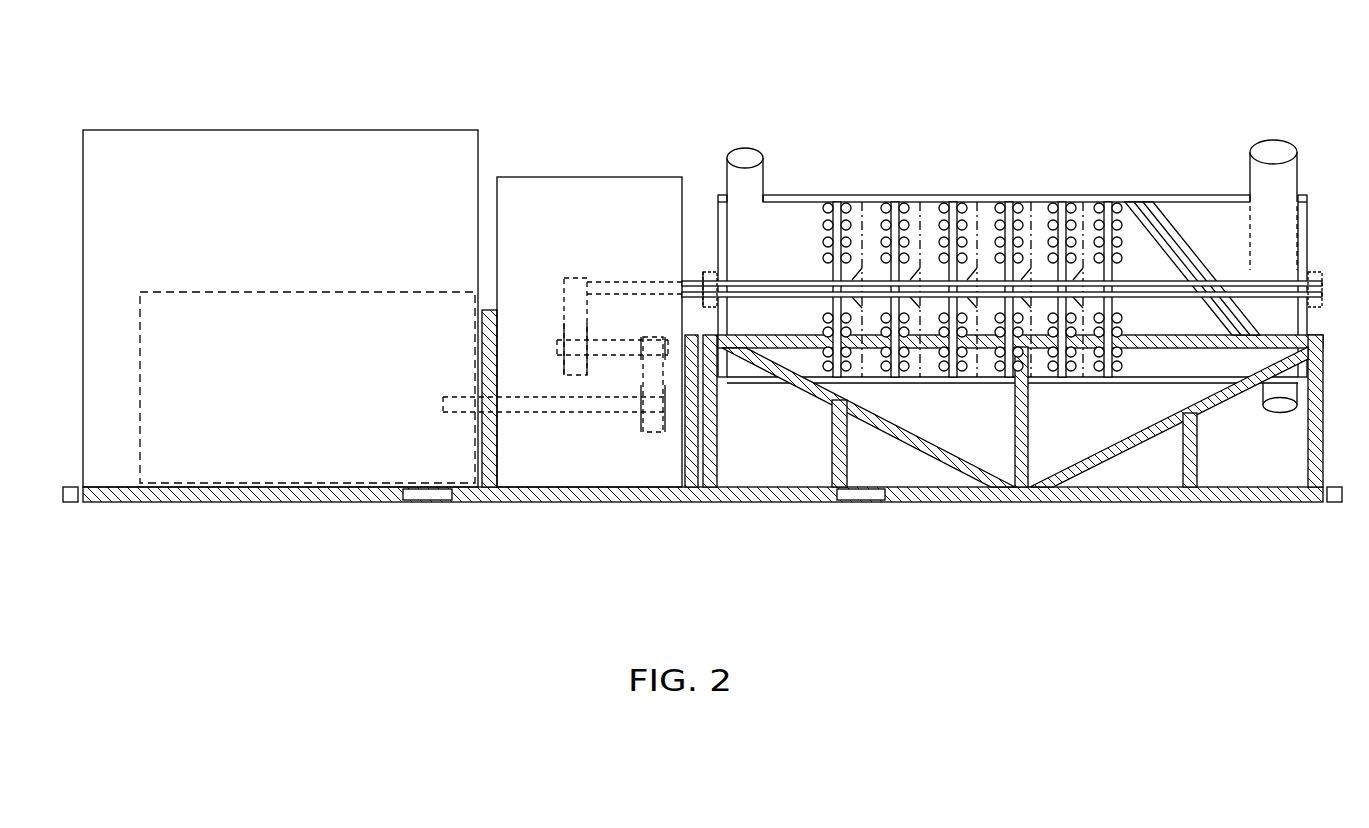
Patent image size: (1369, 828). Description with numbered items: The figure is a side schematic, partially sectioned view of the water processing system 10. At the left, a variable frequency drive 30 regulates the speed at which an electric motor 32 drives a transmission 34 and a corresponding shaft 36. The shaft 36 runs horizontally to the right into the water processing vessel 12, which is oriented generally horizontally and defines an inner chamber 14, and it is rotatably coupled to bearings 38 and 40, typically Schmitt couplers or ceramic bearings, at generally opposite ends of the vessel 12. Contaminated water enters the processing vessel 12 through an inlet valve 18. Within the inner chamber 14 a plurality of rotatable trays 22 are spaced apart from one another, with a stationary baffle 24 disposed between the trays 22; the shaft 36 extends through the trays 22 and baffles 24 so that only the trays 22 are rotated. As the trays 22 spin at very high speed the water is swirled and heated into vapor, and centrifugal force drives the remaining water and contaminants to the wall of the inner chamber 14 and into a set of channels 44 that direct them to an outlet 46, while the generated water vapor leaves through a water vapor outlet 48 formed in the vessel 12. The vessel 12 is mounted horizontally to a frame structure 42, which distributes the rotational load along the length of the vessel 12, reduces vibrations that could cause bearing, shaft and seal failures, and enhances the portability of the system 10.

The system 10 is at (208, 525).
The water processing vessel 12 is at (808, 197).
The inner chamber 14 is at (1138, 242).
The inlet valve 18 is at (745, 157).
The rotatable trays 22 is at (853, 297).
The baffle 24 is at (920, 207).
The variable frequency drive 30 is at (458, 145).
The electric motor 32 is at (410, 428).
The transmission 34 is at (642, 188).
The shaft 36 is at (807, 298).
The bearing 38 is at (710, 308).
The bearing 40 is at (1313, 270).
The frame structure 42 is at (1030, 435).
The channels 44 is at (1183, 237).
The outlet 46 is at (1280, 411).
The water vapor outlet 48 is at (1278, 153).